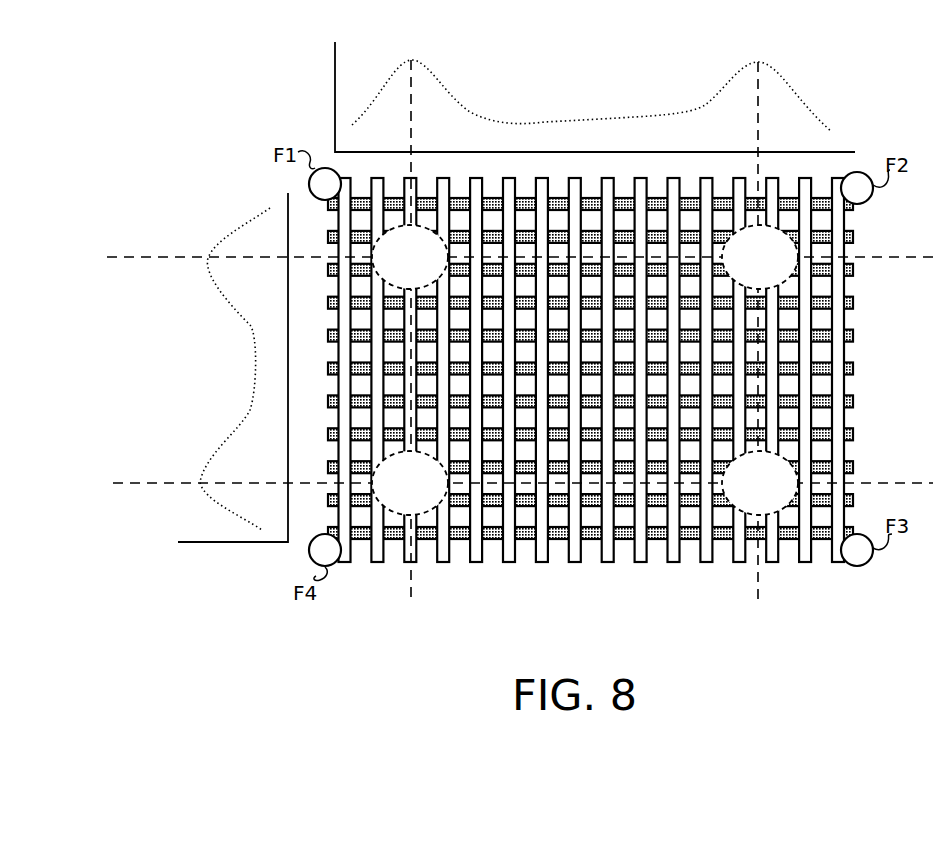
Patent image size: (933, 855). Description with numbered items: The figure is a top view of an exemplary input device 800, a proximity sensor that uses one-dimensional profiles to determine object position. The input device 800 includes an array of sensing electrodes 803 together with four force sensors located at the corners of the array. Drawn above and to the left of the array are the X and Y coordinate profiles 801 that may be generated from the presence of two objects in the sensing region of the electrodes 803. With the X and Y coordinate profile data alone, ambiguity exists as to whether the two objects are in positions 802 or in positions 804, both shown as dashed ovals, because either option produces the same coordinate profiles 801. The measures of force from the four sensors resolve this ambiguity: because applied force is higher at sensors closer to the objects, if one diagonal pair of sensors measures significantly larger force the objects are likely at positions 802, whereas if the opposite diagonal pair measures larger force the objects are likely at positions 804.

The input device 800 is at (614, 624).
The X and Y coordinate profiles 801 is at (595, 110).
The positions 802 is at (585, 370).
The array of sensing electrodes 803 is at (855, 342).
The positions 804 is at (585, 370).